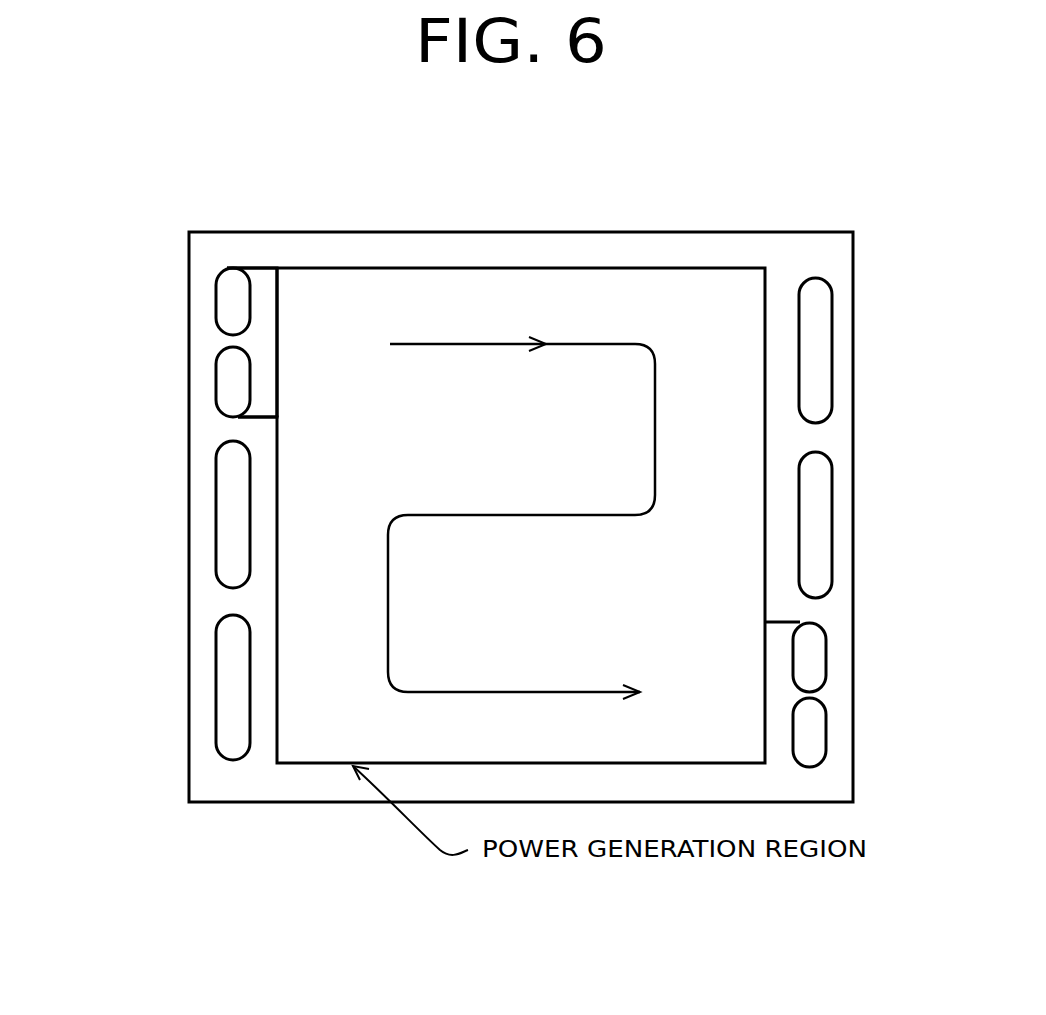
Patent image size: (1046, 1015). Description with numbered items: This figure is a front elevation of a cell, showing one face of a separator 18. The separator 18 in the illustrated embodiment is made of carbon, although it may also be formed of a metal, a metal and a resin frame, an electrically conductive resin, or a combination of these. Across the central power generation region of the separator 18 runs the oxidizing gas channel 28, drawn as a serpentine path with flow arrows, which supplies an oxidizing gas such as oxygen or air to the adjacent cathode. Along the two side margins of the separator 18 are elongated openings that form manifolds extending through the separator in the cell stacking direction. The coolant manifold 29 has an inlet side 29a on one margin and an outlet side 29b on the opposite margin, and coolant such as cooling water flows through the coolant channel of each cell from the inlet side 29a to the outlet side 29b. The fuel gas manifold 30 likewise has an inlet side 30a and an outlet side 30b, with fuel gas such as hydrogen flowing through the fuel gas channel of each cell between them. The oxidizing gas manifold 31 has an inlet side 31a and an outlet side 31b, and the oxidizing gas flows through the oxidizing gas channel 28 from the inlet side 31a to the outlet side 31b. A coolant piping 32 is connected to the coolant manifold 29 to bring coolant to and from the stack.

The separator 18 is at (648, 233).
The oxidizing gas channel 28 is at (470, 344).
The coolant manifold 29 is at (149, 514).
The inlet side 29a is at (234, 512).
The outlet side 29b is at (813, 533).
The fuel gas manifold 30 is at (840, 292).
The inlet side 30a is at (817, 307).
The outlet side 30b is at (234, 679).
The oxidizing gas manifold 31 is at (146, 329).
The inlet side 31a is at (230, 291).
The outlet side 31b is at (818, 712).
The coolant piping 32 is at (257, 292).